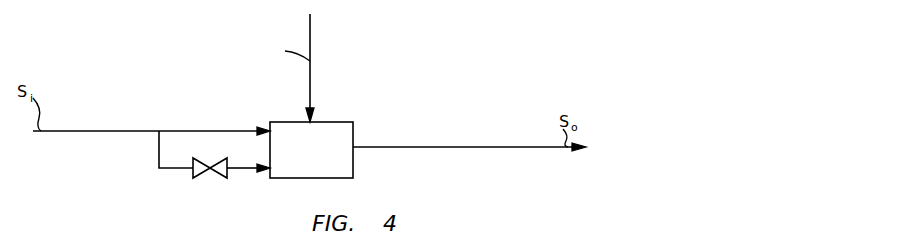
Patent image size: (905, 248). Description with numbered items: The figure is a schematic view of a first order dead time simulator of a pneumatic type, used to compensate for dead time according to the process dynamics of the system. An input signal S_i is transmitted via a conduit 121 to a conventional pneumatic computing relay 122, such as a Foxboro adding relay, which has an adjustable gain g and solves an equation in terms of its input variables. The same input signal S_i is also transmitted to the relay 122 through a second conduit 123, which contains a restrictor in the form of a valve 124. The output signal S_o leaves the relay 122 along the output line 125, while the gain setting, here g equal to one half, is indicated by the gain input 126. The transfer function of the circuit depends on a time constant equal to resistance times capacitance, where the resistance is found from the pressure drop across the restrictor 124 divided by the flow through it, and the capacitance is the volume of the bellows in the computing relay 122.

The conduit 121 is at (125, 131).
The pneumatic computing relay 122 is at (327, 155).
The conduit 123 is at (158, 168).
The valve 124 is at (218, 180).
The output signal line 125 is at (455, 147).
The gain control input g=1/2 126 is at (310, 50).